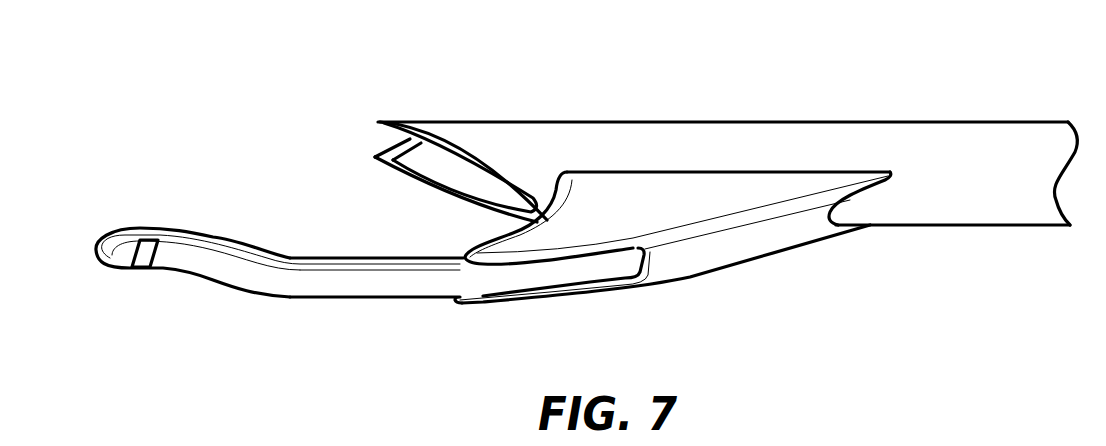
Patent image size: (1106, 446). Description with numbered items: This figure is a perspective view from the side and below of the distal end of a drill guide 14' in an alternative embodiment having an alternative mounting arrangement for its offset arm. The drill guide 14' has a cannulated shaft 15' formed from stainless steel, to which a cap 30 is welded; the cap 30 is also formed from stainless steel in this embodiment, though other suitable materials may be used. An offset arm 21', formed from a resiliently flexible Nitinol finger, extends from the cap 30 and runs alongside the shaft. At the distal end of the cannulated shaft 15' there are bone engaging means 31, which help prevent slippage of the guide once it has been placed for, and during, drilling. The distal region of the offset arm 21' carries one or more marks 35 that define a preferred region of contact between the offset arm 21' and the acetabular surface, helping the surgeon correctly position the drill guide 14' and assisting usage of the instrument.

The drill guide 14' is at (956, 127).
The cannulated shaft 15' is at (723, 97).
The offset arm 21' is at (373, 307).
The cap 30 is at (727, 198).
The bone engaging means 31 is at (378, 121).
The marks 35 is at (142, 258).